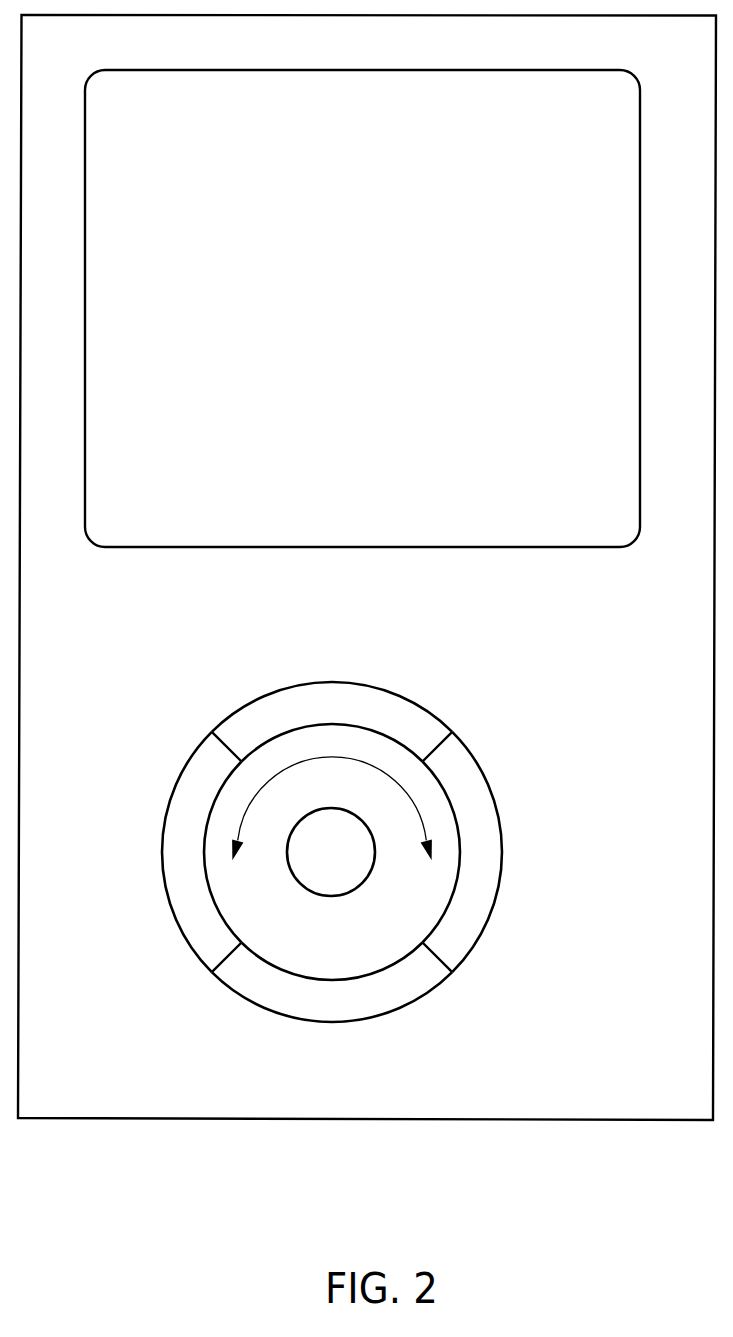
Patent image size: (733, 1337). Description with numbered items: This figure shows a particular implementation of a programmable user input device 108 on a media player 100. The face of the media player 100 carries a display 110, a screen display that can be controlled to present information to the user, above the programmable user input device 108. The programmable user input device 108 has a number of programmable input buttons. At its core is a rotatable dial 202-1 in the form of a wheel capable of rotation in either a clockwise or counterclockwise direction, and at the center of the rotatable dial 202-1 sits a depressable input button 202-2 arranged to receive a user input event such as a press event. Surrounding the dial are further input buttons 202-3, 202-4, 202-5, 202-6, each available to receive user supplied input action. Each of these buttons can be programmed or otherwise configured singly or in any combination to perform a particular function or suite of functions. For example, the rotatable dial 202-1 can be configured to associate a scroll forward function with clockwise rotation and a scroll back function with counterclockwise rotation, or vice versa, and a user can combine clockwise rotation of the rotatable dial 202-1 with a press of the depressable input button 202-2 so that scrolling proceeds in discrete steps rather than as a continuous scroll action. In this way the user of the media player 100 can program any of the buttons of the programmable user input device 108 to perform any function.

The media player 100 is at (367, 567).
The display 110 is at (362, 308).
The programmable user input device 108 is at (341, 845).
The rotatable dial 202-1 is at (332, 853).
The depressable input button 202-2 is at (331, 852).
The input button 202-3 is at (180, 772).
The input button 202-4 is at (332, 721).
The input button 202-5 is at (493, 792).
The input button 202-6 is at (332, 982).